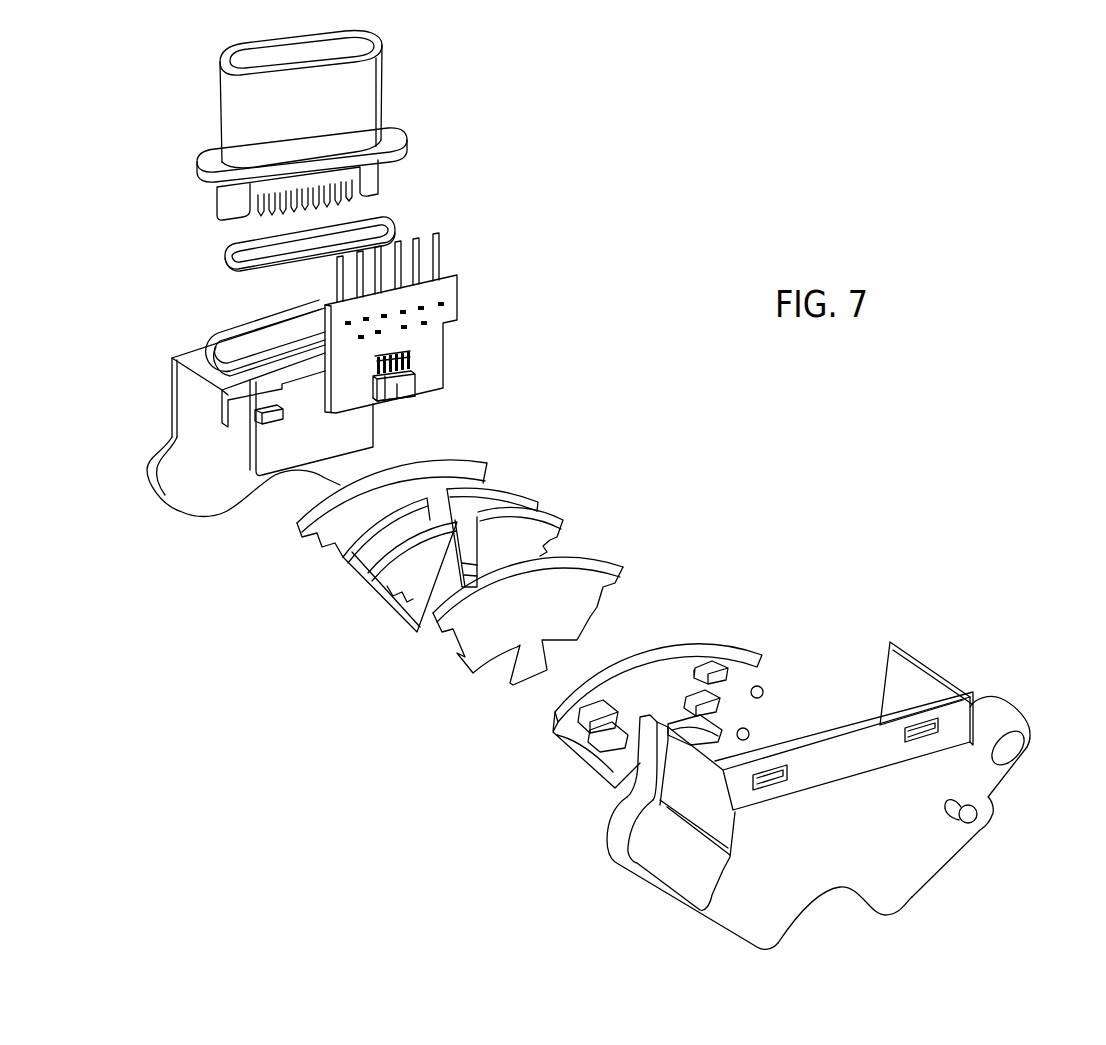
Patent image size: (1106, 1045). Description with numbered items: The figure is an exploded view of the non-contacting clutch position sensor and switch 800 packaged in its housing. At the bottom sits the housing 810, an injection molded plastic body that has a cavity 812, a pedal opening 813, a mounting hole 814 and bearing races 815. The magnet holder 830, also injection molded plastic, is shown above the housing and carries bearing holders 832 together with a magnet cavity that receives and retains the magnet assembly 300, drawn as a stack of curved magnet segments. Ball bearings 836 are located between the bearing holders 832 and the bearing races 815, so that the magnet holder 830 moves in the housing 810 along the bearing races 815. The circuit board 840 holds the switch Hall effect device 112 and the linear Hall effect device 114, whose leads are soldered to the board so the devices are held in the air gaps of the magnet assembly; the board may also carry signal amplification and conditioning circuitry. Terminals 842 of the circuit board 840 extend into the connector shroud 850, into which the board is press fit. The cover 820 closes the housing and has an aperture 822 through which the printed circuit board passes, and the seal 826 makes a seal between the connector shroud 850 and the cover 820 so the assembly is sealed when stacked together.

The clutch position sensor and switch 800 is at (690, 180).
The connector shroud 850 is at (222, 118).
The seal 826 is at (230, 257).
The terminals 842 is at (452, 249).
The circuit board 840 is at (458, 348).
The linear Hall effect device 114 is at (430, 388).
The switch Hall effect device 112 is at (392, 398).
The aperture 822 is at (243, 338).
The cover 820 is at (185, 490).
The magnet assembly 300 is at (357, 606).
The magnet holder 830 is at (567, 753).
The bearing holders 832 is at (713, 662).
The ball bearings 836 is at (760, 683).
The bearing races 815 is at (828, 720).
The cavity 812 is at (868, 668).
The mounting hole 814 is at (1013, 745).
The housing 810 is at (943, 858).
The pedal opening 813 is at (907, 915).